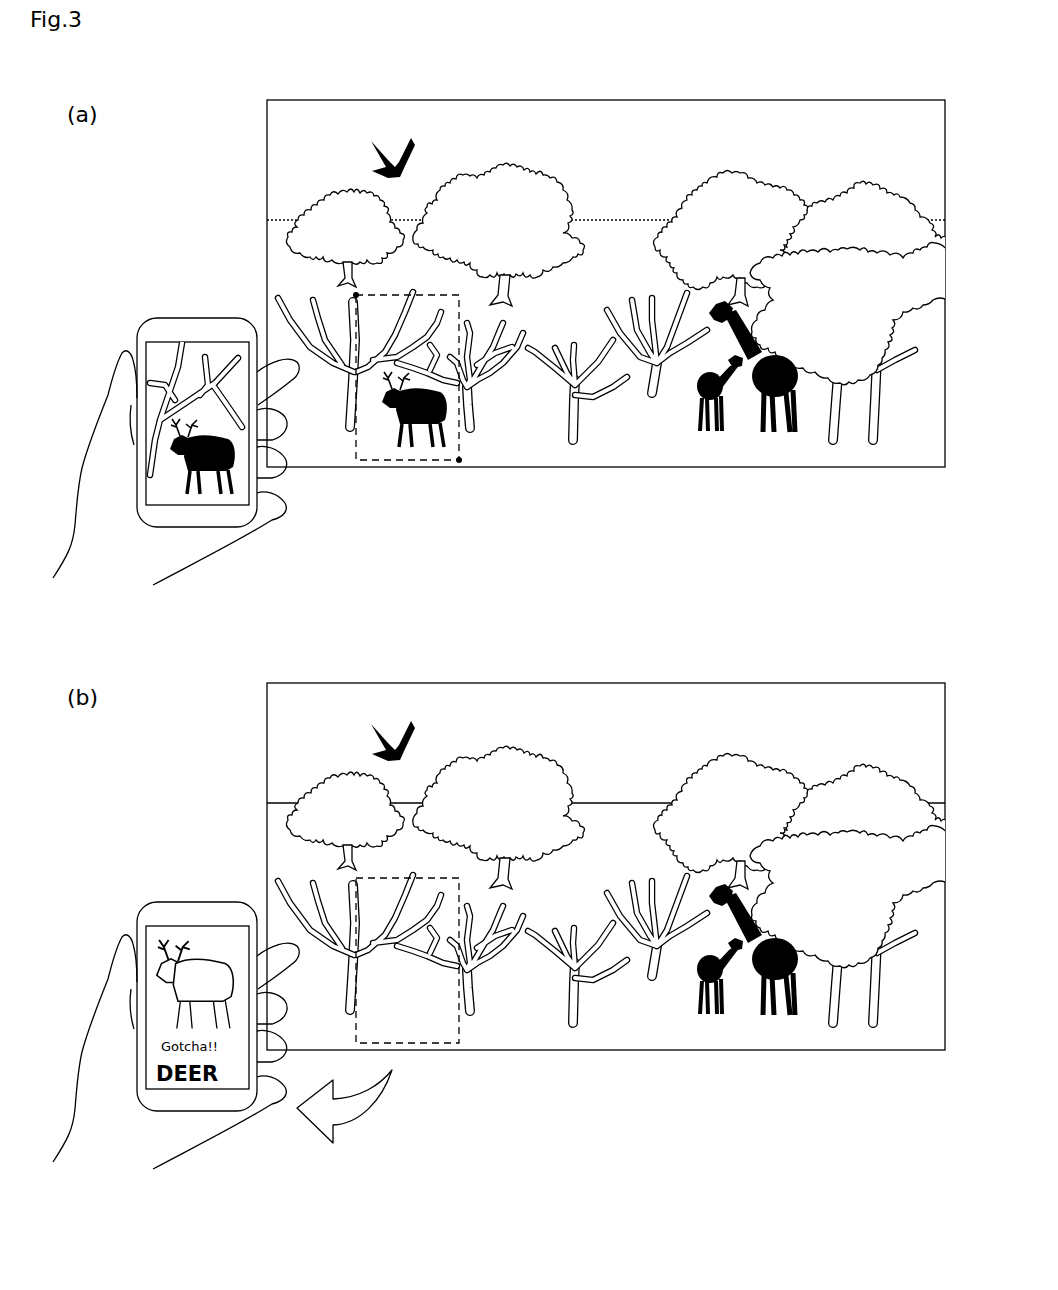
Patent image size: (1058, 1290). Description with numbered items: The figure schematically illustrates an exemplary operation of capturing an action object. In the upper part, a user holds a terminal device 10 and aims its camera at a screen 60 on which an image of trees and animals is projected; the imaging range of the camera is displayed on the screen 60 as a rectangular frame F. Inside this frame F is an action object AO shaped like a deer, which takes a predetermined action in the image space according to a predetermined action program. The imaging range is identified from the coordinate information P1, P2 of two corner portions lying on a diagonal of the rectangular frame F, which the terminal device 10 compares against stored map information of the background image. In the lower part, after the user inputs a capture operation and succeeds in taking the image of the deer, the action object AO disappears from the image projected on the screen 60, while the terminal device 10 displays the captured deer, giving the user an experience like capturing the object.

The screen 60 is at (248, 130).
The terminal device 10 is at (118, 322).
The frame F is at (408, 462).
The action object AO is at (392, 422).
The coordinate information of a corner portion P1 is at (356, 295).
The coordinate information of a corner portion P2 is at (459, 460).